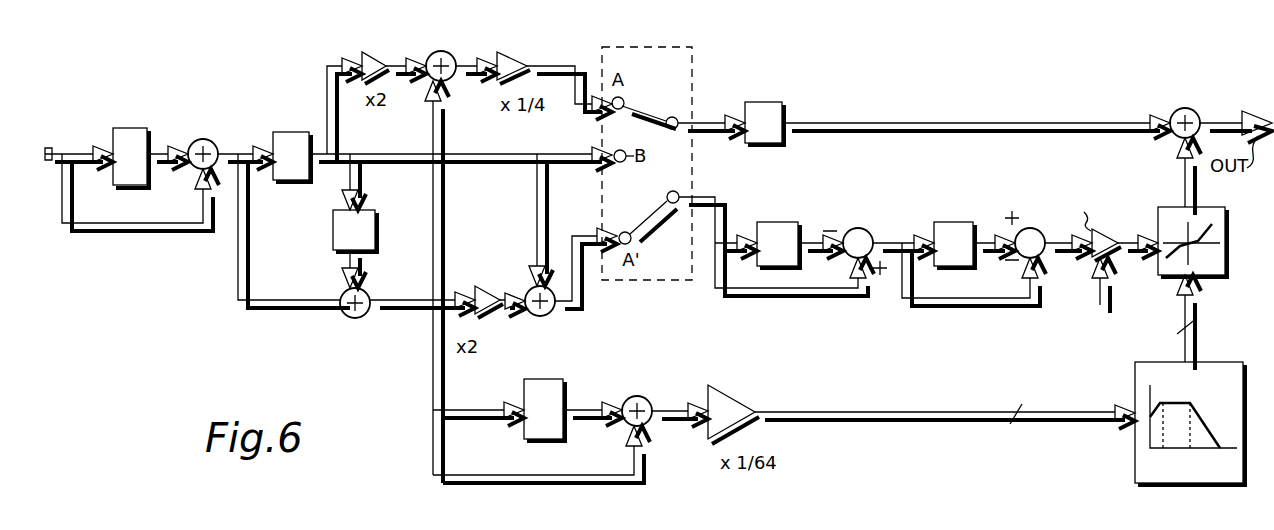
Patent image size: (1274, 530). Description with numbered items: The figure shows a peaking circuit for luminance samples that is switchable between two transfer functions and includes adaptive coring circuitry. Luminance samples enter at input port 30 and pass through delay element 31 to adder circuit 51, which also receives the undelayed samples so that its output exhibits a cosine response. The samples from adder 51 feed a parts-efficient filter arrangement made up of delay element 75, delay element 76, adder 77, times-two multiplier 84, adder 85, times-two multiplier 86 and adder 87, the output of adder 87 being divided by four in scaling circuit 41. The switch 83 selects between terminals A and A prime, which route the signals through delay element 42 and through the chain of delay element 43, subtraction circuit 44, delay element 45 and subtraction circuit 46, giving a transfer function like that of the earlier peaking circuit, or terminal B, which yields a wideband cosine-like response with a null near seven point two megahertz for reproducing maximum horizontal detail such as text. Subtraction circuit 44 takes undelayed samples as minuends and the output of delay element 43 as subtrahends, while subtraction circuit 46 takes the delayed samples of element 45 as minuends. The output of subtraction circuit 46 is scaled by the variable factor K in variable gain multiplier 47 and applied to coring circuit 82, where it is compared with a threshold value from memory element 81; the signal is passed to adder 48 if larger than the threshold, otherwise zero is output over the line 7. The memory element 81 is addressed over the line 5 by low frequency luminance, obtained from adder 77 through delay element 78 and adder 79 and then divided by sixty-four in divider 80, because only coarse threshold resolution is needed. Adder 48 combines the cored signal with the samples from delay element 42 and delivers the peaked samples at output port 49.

The input port 30 is at (64, 152).
The delay element 31 is at (125, 128).
The adder circuit 51 is at (203, 139).
The delay element 75 is at (299, 132).
The delay element 76 is at (378, 233).
The adder circuit 77 is at (362, 319).
The delay element 78 is at (548, 381).
The adder 79 is at (637, 397).
The divider 80 is at (735, 403).
The memory element 81 is at (1246, 421).
The coring circuit 82 is at (1228, 243).
The switch 83 is at (694, 58).
The times-two multiplier 84 is at (477, 286).
The adder 85 is at (540, 316).
The times-two multiplier 86 is at (375, 66).
The adder 87 is at (441, 50).
The scaling circuit 41 is at (506, 69).
The delay element 42 is at (762, 102).
The delay element 43 is at (778, 222).
The subtraction circuit 44 is at (858, 228).
The delay element 45 is at (951, 222).
The subtraction circuit 46 is at (1030, 228).
The variable gain multiplier 47 is at (1100, 230).
The adder 48 is at (1188, 109).
The output port 49 is at (1218, 118).
The signal line 5 is at (1017, 427).
The coefficient signal line 7 is at (1198, 320).